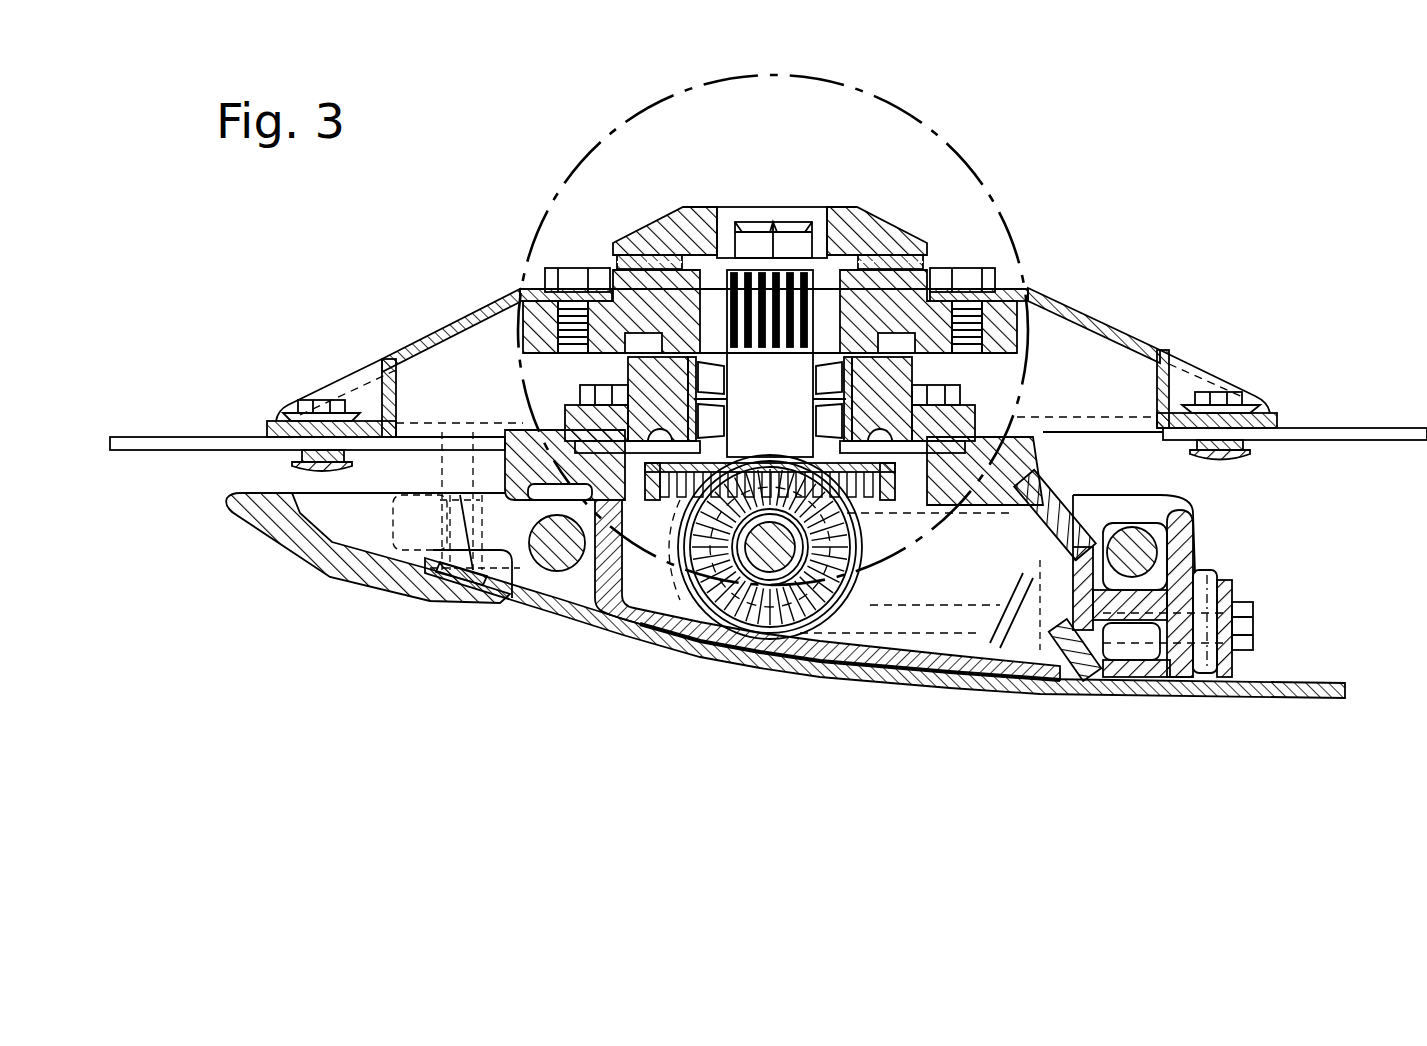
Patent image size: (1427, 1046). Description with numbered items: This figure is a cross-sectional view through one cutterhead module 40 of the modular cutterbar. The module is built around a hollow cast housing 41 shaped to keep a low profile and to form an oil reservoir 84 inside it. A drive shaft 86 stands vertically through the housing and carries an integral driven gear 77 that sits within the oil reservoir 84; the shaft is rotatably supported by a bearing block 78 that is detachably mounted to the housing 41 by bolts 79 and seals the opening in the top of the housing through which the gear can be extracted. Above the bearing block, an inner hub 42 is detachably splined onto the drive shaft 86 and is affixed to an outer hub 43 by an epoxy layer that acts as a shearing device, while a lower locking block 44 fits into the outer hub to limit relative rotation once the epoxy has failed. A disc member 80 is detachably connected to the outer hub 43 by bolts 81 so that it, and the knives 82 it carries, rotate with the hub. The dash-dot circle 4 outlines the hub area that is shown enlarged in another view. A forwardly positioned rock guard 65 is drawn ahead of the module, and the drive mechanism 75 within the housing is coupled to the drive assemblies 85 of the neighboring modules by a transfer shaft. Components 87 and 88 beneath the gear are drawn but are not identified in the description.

The section view region of FIG. 4 is at (1013, 228).
The cutterhead module 40 is at (366, 296).
The hollow cast housing 41 is at (595, 585).
The inner hub 42 is at (678, 242).
The outer hub 43 is at (615, 262).
The lower locking block 44 is at (727, 424).
The rock guard 65 is at (267, 537).
The drive mechanism 75 is at (847, 593).
The driven gear 77 is at (860, 498).
The bearing block 78 is at (633, 368).
The bolts 79 is at (593, 388).
The disc member 80 is at (1117, 333).
The bolts 81 is at (545, 265).
The knives 82 is at (190, 440).
The oil reservoir 84 is at (960, 543).
The cutterhead module drive assemblies 85 is at (672, 587).
The drive shaft 86 is at (788, 392).
The rotor 87 is at (710, 600).
The hub 88 is at (766, 572).